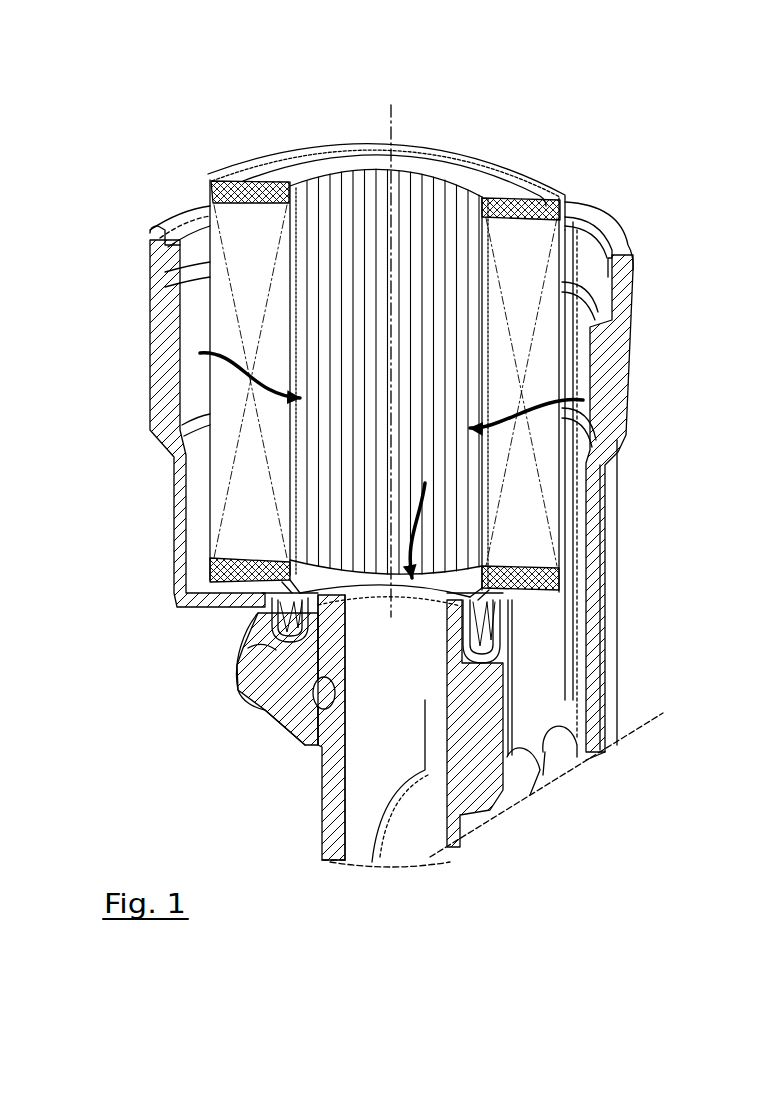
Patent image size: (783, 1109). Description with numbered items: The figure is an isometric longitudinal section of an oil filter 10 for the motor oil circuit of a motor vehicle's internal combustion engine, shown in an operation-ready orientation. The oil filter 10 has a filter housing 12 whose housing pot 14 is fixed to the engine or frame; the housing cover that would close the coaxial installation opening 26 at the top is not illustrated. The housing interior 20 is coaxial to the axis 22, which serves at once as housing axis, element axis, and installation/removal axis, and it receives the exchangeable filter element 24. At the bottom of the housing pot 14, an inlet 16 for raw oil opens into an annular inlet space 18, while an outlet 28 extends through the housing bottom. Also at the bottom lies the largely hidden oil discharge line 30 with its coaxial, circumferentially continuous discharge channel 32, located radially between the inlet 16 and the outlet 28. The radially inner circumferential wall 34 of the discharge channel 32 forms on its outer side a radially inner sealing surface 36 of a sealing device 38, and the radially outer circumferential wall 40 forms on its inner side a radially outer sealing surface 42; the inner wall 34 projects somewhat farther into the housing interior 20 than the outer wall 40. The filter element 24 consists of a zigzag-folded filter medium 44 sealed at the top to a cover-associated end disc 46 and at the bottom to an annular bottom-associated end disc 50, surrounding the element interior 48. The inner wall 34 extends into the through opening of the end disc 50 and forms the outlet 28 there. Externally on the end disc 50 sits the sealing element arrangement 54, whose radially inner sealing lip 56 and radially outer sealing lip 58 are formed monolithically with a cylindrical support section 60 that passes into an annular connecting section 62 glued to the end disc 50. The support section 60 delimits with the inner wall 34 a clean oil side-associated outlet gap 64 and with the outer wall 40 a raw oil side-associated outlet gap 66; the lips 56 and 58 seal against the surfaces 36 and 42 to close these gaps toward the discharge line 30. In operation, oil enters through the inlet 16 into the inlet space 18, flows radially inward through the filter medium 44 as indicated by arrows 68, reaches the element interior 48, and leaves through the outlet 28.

The oil filter 10 is at (158, 142).
The filter housing 12 is at (152, 332).
The housing pot 14 is at (162, 417).
The inlet 16 is at (547, 745).
The annular inlet space 18 is at (196, 490).
The housing interior 20 is at (575, 353).
The axis 22 is at (388, 125).
The filter element 24 is at (546, 176).
The installation opening 26 is at (188, 247).
The outlet 28 is at (393, 817).
The oil discharge line 30 is at (280, 652).
The discharge channel 32 is at (250, 648).
The radially inner circumferential wall 34 is at (317, 623).
The radially inner sealing surface 36 is at (297, 593).
The sealing device 38 is at (482, 660).
The radially outer circumferential wall 40 is at (258, 614).
The radially outer sealing surface 42 is at (176, 593).
The filter medium 44 is at (538, 269).
The cover-associated end disc 46 is at (256, 183).
The element interior 48 is at (358, 247).
The bottom-associated end disc 50 is at (560, 578).
The sealing element arrangement 54 is at (292, 648).
The radially inner sealing lip 56 is at (467, 623).
The radially outer sealing lip 58 is at (487, 638).
The support section 60 is at (497, 630).
The connecting section 62 is at (500, 602).
The clean oil side-associated outlet gap 64 is at (305, 588).
The raw oil side-associated outlet gap 66 is at (500, 612).
The arrows 68 is at (590, 455).